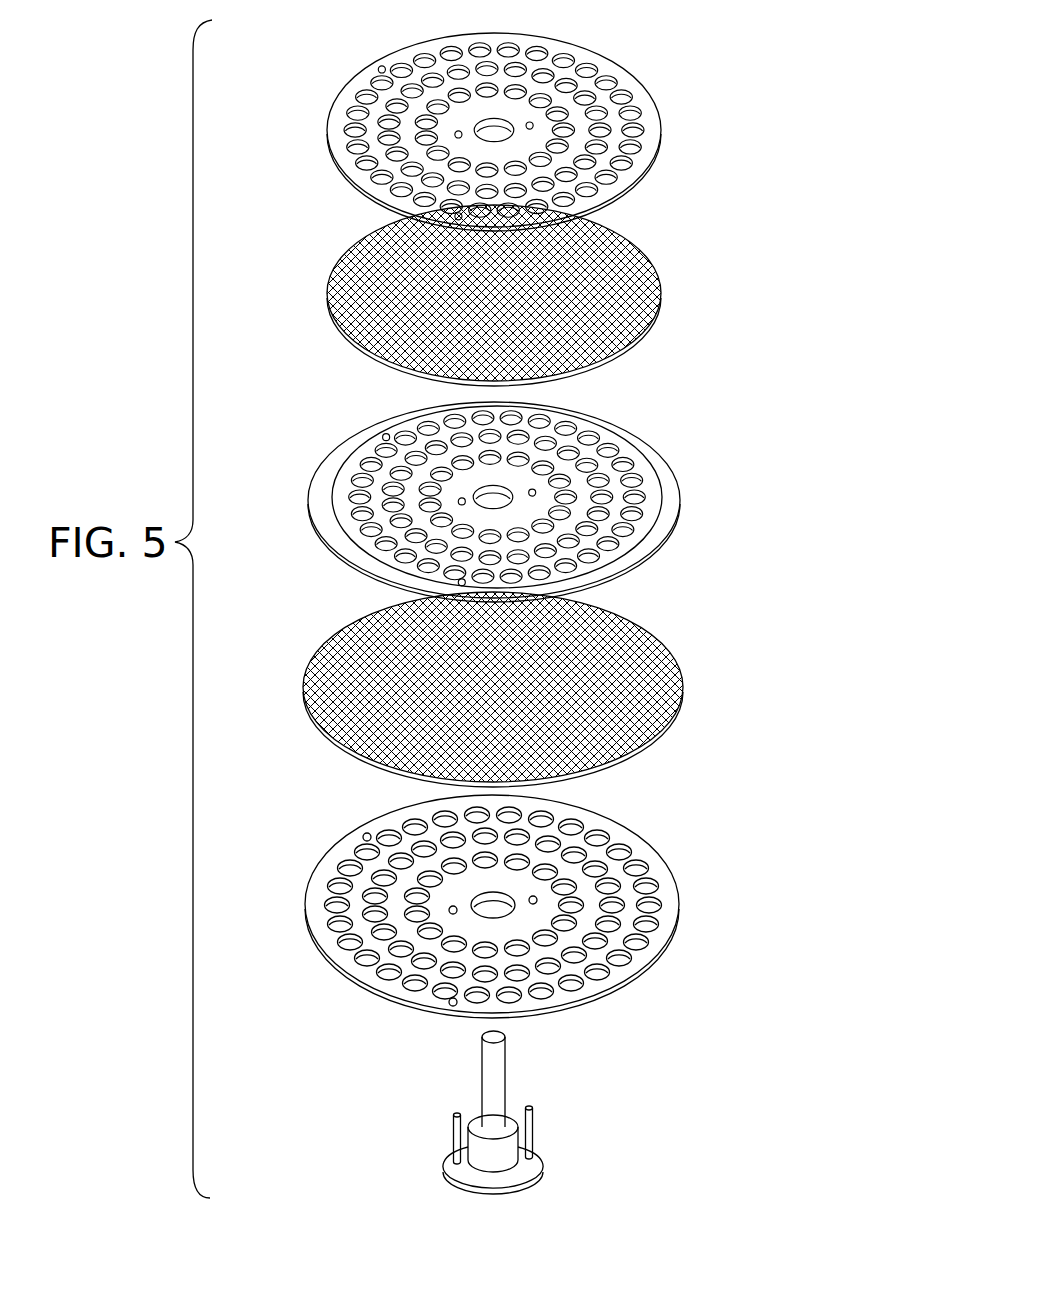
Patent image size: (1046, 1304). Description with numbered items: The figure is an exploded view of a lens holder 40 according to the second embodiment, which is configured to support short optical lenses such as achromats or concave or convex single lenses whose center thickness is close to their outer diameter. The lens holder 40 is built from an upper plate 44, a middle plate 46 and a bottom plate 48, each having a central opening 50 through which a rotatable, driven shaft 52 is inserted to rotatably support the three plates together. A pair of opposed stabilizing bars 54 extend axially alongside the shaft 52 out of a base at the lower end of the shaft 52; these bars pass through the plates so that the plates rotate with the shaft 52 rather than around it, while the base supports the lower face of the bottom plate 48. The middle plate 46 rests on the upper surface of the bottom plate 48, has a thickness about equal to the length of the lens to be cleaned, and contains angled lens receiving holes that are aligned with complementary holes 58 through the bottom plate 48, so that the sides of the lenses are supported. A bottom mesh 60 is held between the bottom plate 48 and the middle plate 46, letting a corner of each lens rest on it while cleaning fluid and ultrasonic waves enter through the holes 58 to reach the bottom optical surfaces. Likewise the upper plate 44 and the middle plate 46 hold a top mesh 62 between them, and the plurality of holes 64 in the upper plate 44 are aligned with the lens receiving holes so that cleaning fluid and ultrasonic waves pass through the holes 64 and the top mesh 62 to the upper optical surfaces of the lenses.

The lens holder 40 is at (304, 590).
The upper plate 44 is at (513, 132).
The middle plate 46 is at (528, 496).
The bottom plate 48 is at (517, 906).
The central opening 50 is at (492, 132).
The driven shaft 52 is at (493, 1055).
The stabilizing bars 54 is at (455, 1120).
The holes 58 is at (333, 887).
The bottom mesh 60 is at (683, 668).
The top mesh 62 is at (662, 280).
The holes 64 is at (360, 97).